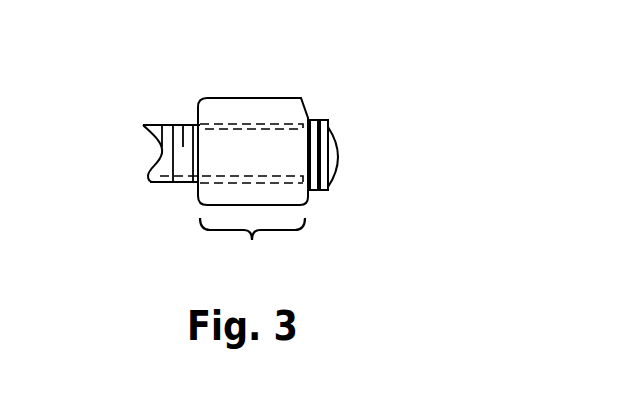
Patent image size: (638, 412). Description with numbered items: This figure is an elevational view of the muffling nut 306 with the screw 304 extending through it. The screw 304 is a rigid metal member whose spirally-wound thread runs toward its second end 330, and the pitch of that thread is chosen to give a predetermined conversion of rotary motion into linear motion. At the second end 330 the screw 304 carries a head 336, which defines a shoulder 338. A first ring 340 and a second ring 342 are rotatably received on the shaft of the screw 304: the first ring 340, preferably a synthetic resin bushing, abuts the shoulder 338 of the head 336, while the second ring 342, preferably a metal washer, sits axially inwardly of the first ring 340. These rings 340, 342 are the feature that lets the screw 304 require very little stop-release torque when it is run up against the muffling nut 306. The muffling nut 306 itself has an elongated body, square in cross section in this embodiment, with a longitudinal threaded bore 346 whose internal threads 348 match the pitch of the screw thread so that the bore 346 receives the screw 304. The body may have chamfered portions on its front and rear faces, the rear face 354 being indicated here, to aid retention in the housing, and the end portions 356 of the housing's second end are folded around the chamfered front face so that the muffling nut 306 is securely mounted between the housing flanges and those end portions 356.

The screw 304 is at (141, 128).
The muffling nut 306 is at (238, 99).
The second end 330 is at (252, 245).
The head 336 is at (342, 141).
The shoulder 338 is at (329, 123).
The first ring 340 is at (323, 117).
The second ring 342 is at (314, 118).
The threaded bore 346 is at (221, 148).
The internal threads 348 is at (188, 190).
The rear face 354 is at (305, 193).
The end portions 356 is at (203, 110).